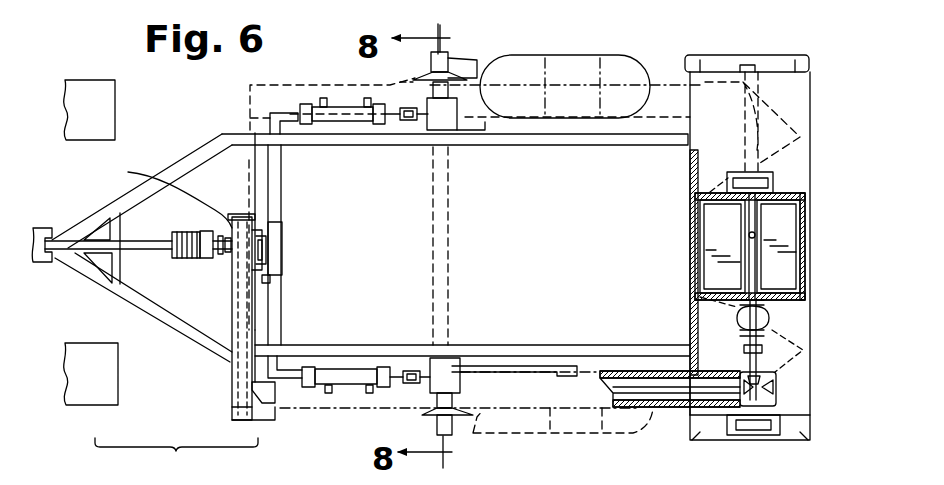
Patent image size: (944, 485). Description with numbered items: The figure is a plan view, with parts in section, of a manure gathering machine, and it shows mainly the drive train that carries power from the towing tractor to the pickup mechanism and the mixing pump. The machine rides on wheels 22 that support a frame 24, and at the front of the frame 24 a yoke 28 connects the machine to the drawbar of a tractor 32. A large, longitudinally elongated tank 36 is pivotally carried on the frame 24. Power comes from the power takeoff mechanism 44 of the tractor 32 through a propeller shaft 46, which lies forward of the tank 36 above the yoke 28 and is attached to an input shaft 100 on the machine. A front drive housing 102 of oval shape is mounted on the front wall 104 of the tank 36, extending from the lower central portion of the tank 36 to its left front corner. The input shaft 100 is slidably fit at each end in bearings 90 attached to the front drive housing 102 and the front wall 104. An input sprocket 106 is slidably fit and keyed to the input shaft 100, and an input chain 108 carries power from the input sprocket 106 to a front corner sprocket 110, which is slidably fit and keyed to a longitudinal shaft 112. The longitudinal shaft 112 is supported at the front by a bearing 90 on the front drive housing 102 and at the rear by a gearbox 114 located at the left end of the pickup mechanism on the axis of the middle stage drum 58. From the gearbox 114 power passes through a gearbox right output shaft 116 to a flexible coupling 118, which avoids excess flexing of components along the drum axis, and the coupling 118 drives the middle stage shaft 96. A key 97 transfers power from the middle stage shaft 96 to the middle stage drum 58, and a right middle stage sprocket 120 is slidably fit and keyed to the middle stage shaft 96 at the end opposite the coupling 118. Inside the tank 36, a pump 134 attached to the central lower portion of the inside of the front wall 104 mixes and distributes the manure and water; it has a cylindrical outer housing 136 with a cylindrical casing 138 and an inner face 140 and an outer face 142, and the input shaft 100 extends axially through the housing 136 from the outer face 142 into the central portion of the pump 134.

The wheel 22 is at (607, 105).
The frame 24 is at (660, 148).
The yoke 28 is at (117, 205).
The tractor 32 is at (112, 390).
The tank 36 is at (246, 160).
The power takeoff mechanism 44 is at (43, 263).
The propeller shaft 46 is at (148, 254).
The middle stage drum 58 is at (788, 215).
The bearing 90 is at (233, 380).
The middle stage shaft 96 is at (777, 262).
The key 97 is at (757, 237).
The input shaft 100 is at (159, 191).
The front drive housing 102 is at (204, 327).
The front wall 104 is at (233, 217).
The input sprocket 106 is at (263, 217).
The input chain 108 is at (287, 307).
The front corner sprocket 110 is at (233, 402).
The longitudinal shaft 112 is at (680, 397).
The gearbox 114 is at (780, 392).
The gearbox right output shaft 116 is at (760, 340).
The flexible coupling 118 is at (770, 320).
The right middle stage sprocket 120 is at (773, 181).
The pump 134 is at (290, 221).
The cylindrical outer housing 136 is at (282, 282).
The cylindrical casing 138 is at (265, 224).
The inner face 140 is at (284, 238).
The outer face 142 is at (282, 252).